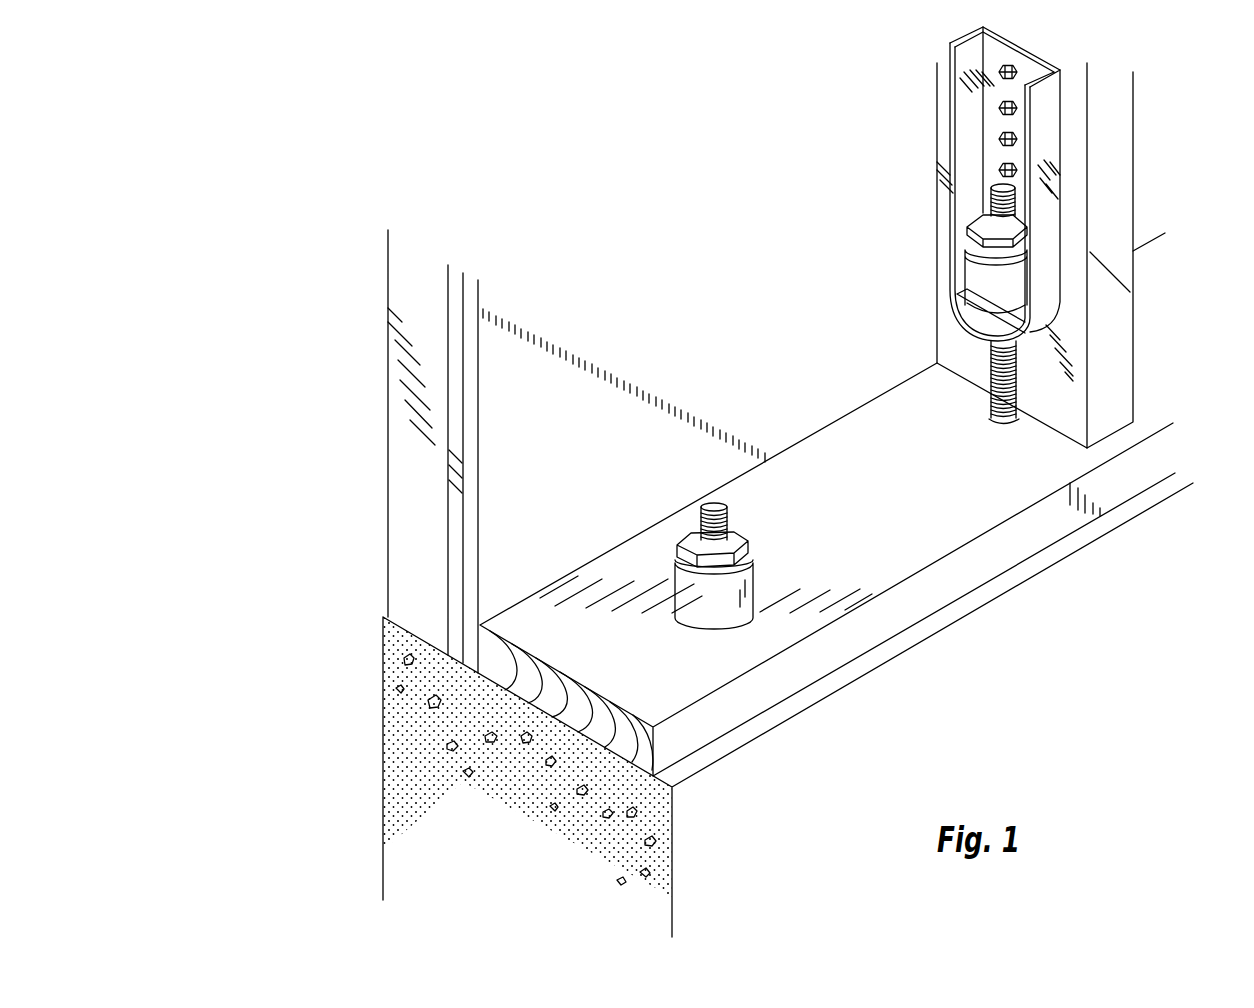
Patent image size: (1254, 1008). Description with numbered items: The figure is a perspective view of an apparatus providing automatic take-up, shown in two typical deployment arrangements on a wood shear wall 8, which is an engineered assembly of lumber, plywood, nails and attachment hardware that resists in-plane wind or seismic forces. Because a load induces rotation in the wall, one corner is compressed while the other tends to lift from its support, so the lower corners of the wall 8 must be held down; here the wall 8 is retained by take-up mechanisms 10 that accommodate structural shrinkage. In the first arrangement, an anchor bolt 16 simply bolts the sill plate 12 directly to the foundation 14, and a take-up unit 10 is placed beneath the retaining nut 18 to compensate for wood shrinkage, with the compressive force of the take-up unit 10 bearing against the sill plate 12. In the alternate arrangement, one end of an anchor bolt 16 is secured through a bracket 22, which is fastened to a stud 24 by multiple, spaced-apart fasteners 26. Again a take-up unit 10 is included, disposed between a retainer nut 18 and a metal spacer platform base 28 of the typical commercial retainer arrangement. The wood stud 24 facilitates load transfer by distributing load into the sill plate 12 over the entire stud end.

The wood shear wall 8 is at (350, 371).
The take-up mechanism 10 is at (808, 328).
The sill plate 12 is at (900, 531).
The foundation 14 is at (955, 704).
The anchor bolt 16 is at (990, 395).
The retaining nut 18 is at (983, 230).
The bracket 22 is at (1052, 158).
The stud 24 is at (1122, 231).
The fasteners 26 is at (998, 170).
The metal spacer platform base 28 is at (985, 321).